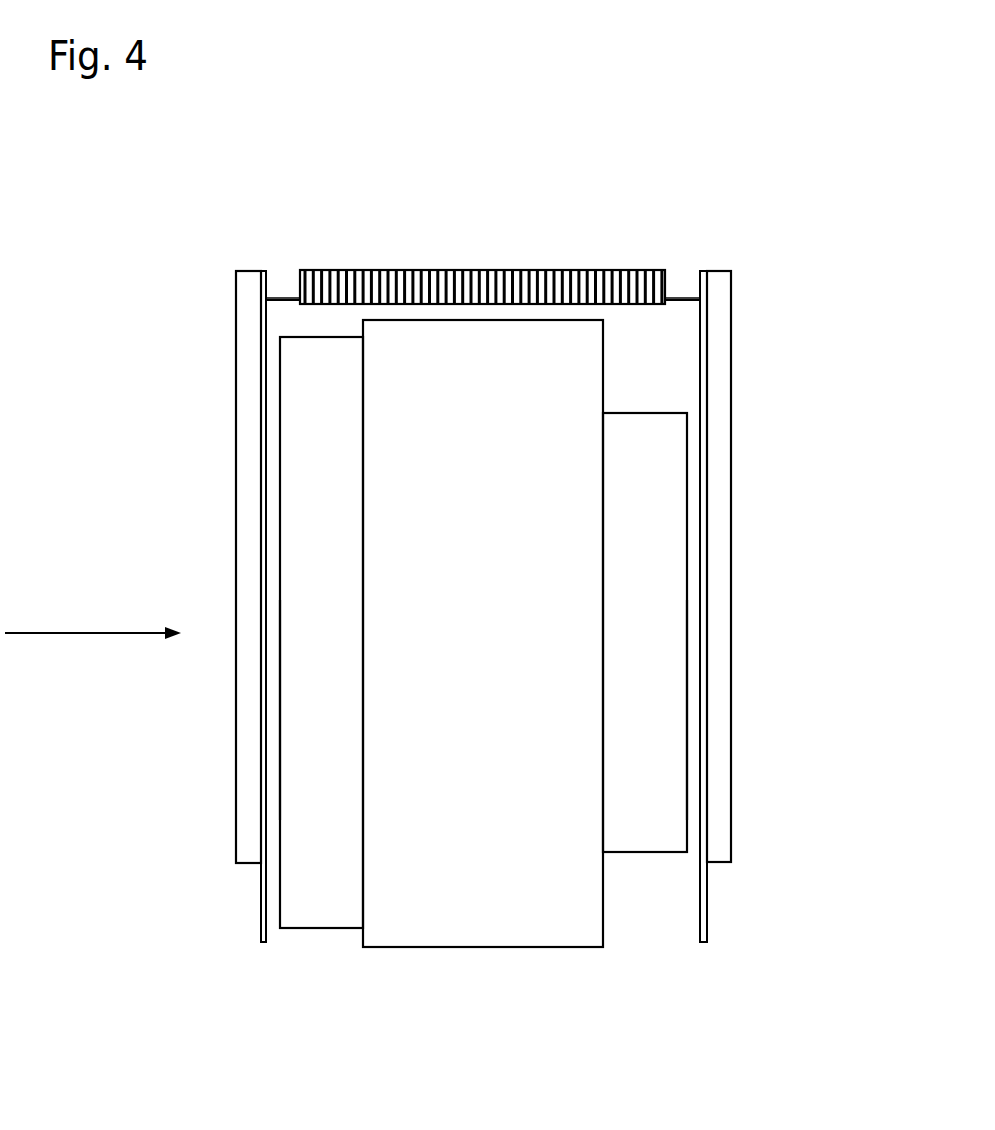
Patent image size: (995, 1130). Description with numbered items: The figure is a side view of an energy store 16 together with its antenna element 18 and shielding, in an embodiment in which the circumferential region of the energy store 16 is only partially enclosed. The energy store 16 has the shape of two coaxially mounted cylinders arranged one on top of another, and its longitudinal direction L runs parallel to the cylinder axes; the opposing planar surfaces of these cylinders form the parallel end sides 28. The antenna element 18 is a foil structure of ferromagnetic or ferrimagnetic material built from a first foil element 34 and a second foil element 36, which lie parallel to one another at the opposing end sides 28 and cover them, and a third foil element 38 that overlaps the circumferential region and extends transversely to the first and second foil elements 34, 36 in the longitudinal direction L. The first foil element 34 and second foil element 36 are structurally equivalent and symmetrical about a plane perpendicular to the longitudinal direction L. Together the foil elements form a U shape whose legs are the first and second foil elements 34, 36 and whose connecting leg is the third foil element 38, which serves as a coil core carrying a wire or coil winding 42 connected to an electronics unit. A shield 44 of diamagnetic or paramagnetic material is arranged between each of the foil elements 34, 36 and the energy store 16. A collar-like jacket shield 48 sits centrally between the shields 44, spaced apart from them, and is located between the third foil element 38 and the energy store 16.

The energy store 16 is at (322, 915).
The antenna element 18 is at (768, 303).
The end sides 28 is at (280, 710).
The first foil element 34 is at (245, 418).
The second foil element 36 is at (725, 418).
The third foil element 38 is at (283, 288).
The coil winding 42 is at (458, 270).
The shield 44 is at (262, 905).
The jacket shield 48 is at (487, 935).
The longitudinal direction L is at (62, 632).